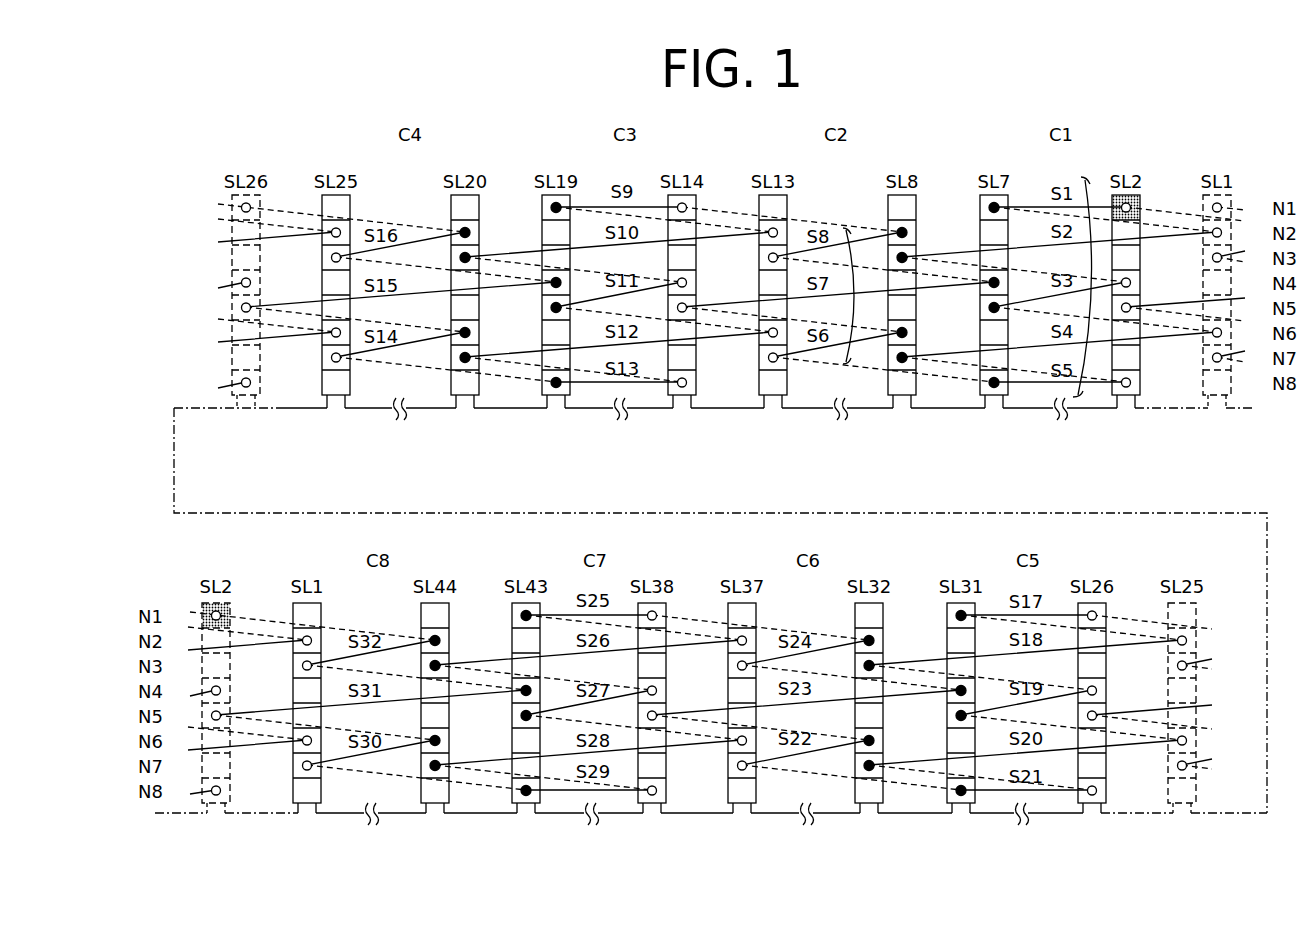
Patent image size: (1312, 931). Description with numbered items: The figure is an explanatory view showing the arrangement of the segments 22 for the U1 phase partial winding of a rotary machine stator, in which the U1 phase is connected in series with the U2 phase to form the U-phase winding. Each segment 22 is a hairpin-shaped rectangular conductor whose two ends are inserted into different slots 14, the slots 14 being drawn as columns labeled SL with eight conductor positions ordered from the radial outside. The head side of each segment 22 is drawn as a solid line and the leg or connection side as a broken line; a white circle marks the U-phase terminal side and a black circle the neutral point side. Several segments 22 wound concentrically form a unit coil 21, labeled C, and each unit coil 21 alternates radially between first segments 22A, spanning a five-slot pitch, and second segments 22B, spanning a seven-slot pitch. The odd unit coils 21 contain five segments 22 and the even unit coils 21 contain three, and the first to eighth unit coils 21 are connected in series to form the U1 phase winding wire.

The slot 14 is at (1121, 412).
The unit coil 21 is at (852, 226).
The segment 22 is at (1098, 261).
The first segment 22A is at (1035, 203).
The second segment 22B is at (1174, 230).